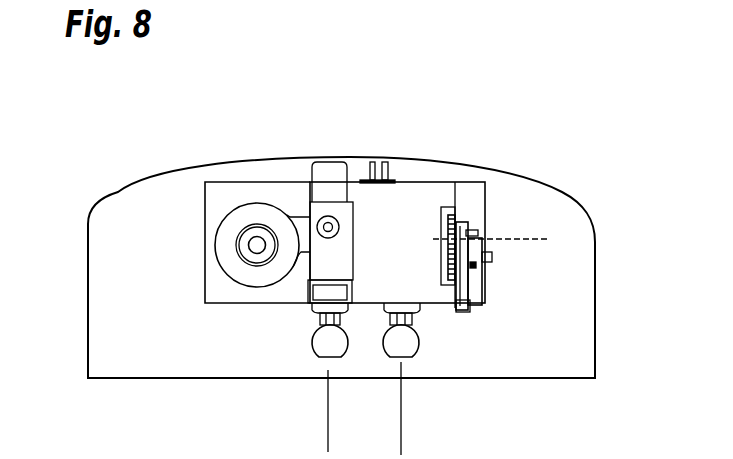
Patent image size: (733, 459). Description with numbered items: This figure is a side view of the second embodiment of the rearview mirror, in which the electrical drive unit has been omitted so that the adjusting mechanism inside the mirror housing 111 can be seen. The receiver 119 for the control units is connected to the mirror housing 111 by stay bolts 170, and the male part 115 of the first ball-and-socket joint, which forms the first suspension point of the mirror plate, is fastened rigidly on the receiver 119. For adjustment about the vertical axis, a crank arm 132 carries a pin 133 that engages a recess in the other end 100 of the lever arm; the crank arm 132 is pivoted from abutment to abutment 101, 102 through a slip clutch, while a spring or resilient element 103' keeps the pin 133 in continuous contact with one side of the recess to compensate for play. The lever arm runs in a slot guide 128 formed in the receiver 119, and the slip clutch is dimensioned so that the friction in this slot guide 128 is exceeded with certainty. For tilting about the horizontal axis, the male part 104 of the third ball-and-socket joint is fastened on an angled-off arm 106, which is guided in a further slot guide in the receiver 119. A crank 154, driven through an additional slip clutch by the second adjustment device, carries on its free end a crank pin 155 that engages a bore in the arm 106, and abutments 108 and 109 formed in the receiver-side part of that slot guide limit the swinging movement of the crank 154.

The other end of the arm 100 is at (465, 246).
The abutment 101 is at (448, 205).
The abutment 102 is at (443, 293).
The spring or resilient element 103' is at (514, 297).
The male part of the third ball-and-socket joint 104 is at (327, 343).
The angled-off arm 106 is at (330, 172).
The abutment 108 is at (330, 197).
The abutment 109 is at (328, 292).
The mirror housing 111 is at (543, 283).
The male part of the first ball-and-socket joint 115 is at (400, 345).
The receiver 119 is at (433, 239).
The slot guide 128 is at (468, 310).
The crank arm 132 is at (452, 215).
The pin 133 is at (470, 256).
The crank 154 is at (232, 227).
The crank pin 155 is at (325, 220).
The stay bolts 170 is at (383, 163).